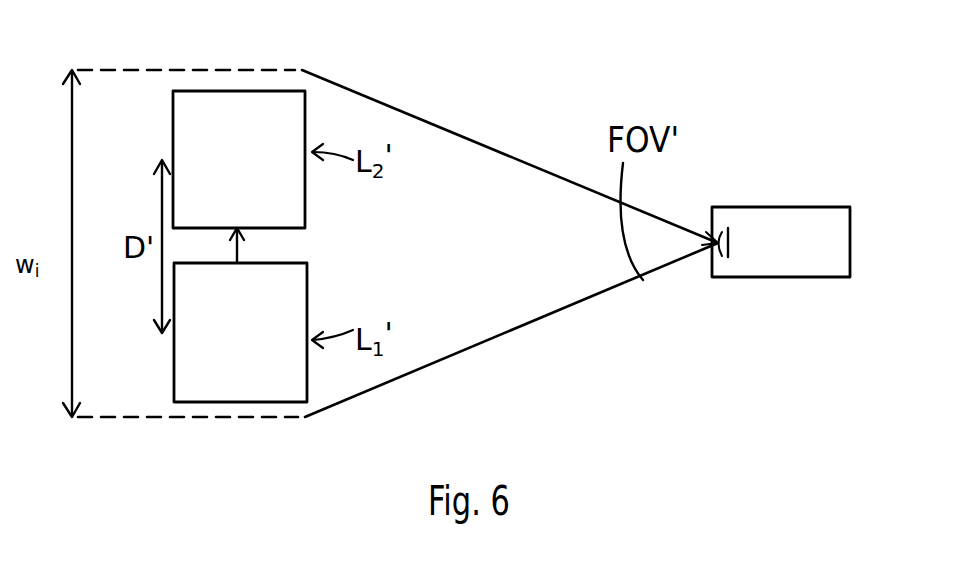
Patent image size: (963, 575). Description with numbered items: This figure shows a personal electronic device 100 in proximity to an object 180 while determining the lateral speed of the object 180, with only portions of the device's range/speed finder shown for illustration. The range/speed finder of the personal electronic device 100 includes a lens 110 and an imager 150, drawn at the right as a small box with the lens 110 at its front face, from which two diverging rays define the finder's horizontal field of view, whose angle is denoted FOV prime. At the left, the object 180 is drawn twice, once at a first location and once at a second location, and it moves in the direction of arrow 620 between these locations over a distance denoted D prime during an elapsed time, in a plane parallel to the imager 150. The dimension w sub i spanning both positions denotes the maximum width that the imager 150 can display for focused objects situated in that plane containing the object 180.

The personal electronic device 100 is at (816, 185).
The lens 110 is at (722, 226).
The imager 150 is at (731, 218).
The object 180 is at (233, 91).
The arrow 620 is at (240, 250).